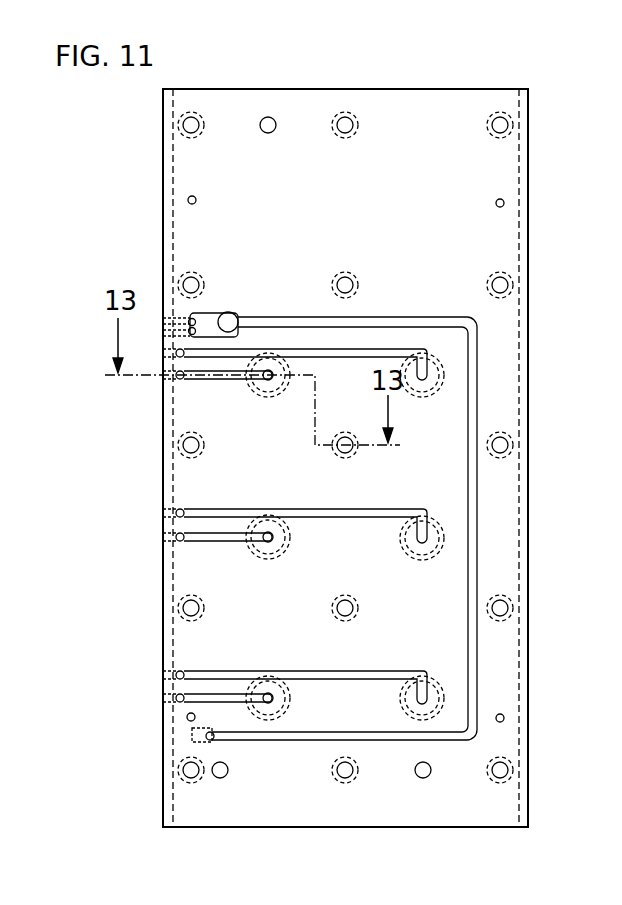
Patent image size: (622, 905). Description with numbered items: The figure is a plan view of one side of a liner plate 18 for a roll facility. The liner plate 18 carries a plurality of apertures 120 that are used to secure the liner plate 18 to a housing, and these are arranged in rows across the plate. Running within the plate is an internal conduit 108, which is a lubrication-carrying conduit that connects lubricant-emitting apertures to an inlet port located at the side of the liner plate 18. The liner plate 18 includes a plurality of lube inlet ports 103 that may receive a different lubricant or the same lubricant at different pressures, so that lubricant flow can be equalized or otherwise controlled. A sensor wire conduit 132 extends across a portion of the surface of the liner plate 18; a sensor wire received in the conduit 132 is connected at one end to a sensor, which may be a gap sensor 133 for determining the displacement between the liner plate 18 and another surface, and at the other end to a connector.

The liner plate 18 is at (395, 105).
The lube inlet ports 103 is at (191, 330).
The internal conduit 108 is at (472, 557).
The apertures 120 is at (508, 767).
The sensor wire conduit 132 is at (207, 318).
The gap sensor 133 is at (233, 320).